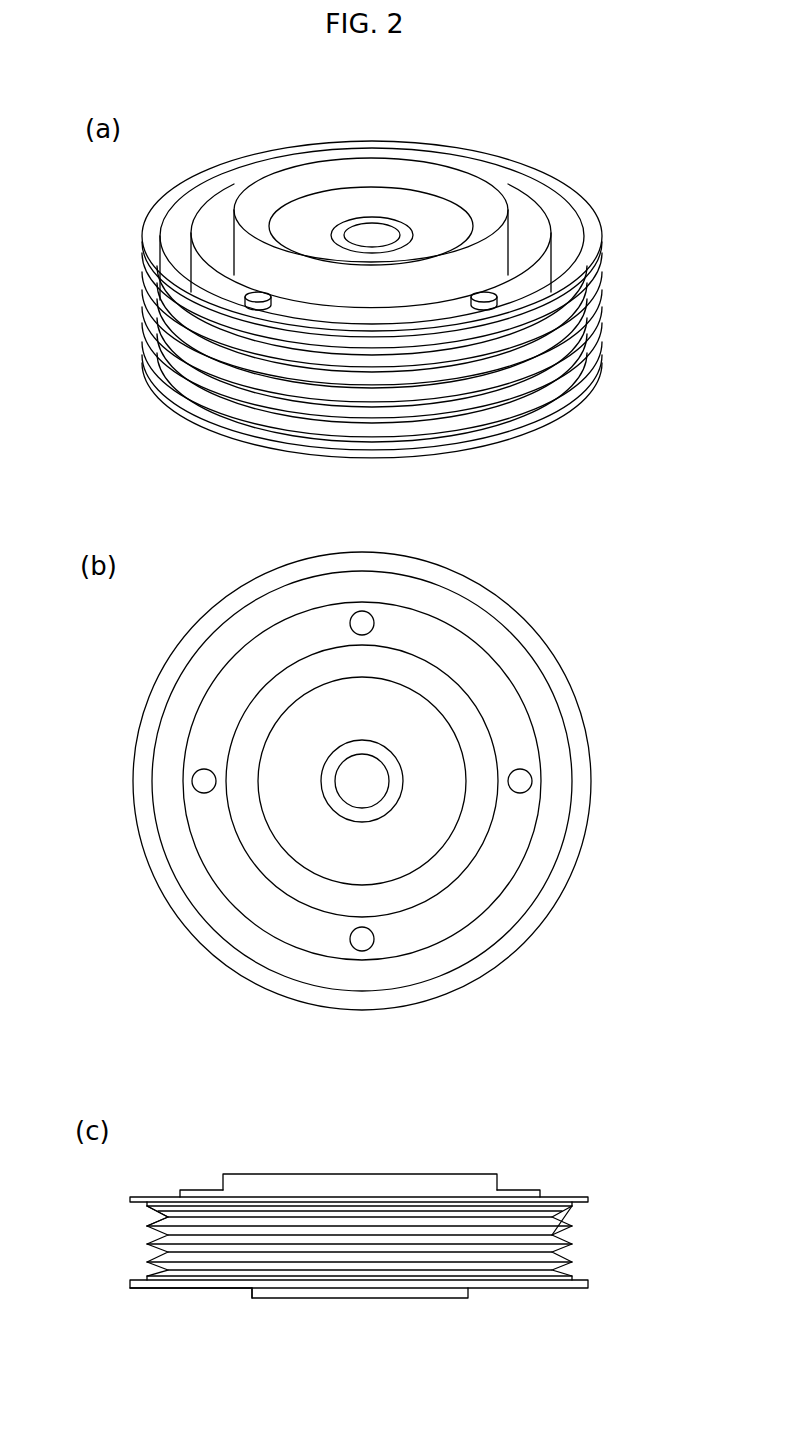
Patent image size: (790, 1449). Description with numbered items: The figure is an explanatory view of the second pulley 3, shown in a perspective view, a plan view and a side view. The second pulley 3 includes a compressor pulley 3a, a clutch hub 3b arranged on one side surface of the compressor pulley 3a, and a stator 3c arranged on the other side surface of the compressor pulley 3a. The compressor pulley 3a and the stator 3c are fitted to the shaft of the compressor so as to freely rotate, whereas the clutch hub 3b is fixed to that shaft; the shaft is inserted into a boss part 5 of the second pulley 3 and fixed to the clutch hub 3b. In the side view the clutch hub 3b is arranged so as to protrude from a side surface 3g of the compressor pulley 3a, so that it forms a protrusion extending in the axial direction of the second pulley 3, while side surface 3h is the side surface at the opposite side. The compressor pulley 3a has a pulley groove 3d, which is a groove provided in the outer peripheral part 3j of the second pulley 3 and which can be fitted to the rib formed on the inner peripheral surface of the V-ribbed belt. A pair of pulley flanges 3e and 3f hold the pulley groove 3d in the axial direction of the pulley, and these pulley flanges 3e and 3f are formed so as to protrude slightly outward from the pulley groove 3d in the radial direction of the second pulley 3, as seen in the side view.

The second pulley 3 is at (528, 140).
The boss part 5 is at (381, 240).
The compressor pulley 3a is at (587, 320).
The clutch hub 3b is at (500, 242).
The stator 3c is at (453, 1298).
The pulley groove 3d is at (510, 387).
The pulley flange 3e is at (143, 232).
The pulley flange 3f is at (588, 1280).
The side surface 3g is at (203, 1182).
The side surface 3h is at (185, 1302).
The outer peripheral part 3j is at (147, 1210).